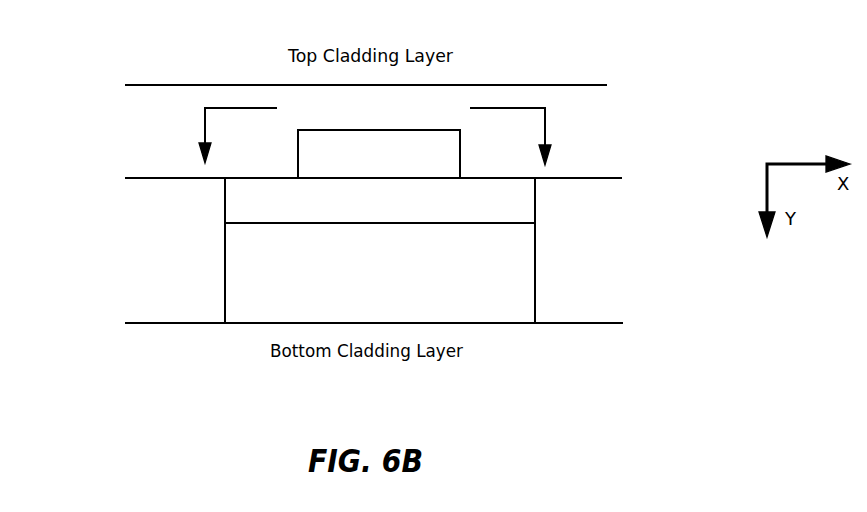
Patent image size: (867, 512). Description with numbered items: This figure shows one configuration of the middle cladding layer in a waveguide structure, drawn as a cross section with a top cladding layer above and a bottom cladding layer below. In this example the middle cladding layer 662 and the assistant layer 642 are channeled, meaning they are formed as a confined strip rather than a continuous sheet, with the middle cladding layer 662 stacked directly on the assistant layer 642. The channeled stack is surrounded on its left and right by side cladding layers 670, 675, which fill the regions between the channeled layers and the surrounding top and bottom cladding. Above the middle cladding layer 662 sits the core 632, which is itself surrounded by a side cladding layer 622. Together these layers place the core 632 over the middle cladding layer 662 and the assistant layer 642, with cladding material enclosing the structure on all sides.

The side cladding layer 622 is at (467, 124).
The core 632 is at (298, 150).
The middle cladding layer 662 is at (535, 203).
The assistant layer 642 is at (225, 288).
The side cladding layer 670 is at (107, 198).
The side cladding layer 675 is at (656, 212).